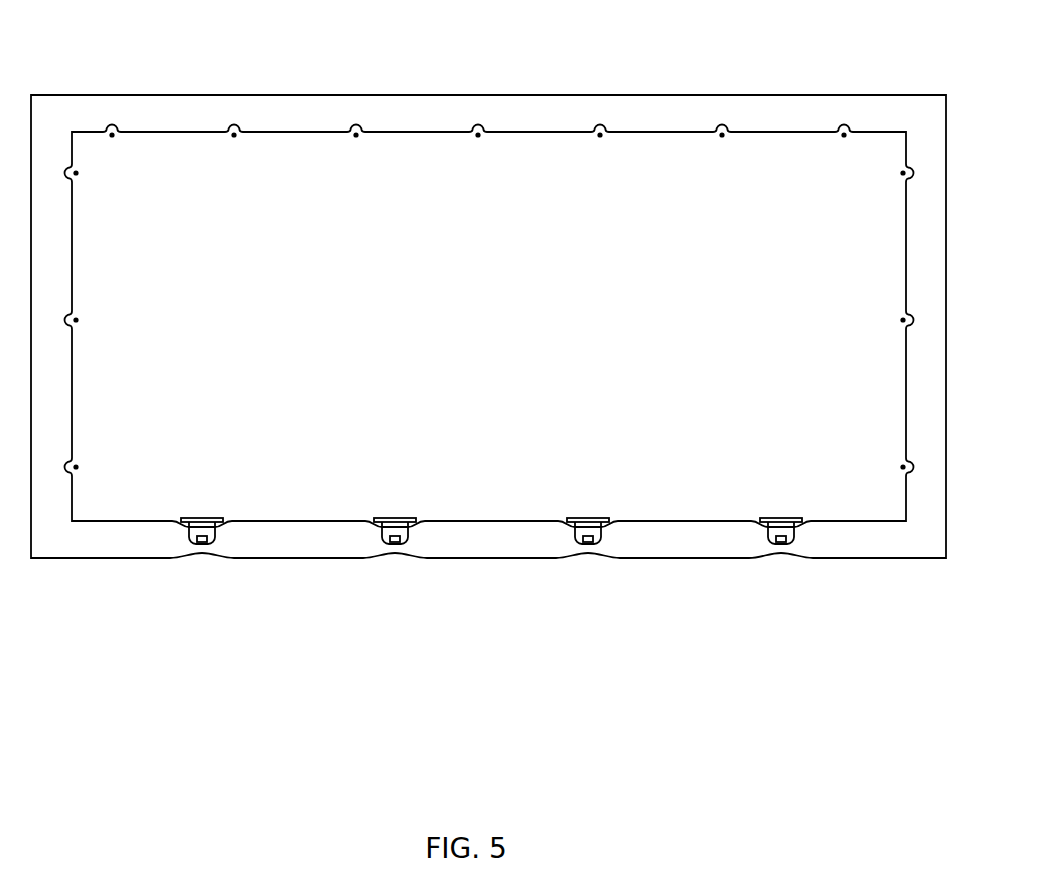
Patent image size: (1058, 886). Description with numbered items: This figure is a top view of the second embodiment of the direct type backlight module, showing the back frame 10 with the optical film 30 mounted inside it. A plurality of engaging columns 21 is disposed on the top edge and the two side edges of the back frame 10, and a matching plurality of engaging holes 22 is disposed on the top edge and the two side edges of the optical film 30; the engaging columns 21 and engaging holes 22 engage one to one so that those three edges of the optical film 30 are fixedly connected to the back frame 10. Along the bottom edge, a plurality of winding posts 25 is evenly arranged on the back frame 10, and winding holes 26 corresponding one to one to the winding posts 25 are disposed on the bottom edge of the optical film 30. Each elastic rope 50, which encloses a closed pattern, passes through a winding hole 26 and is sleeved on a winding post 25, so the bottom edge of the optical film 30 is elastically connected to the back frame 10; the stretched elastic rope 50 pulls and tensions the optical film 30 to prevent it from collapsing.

The back frame 10 is at (218, 105).
The engaging columns 21 is at (110, 130).
The engaging holes 22 is at (237, 128).
The optical film 30 is at (354, 168).
The winding posts 25 is at (201, 541).
The elastic ropes 50 is at (386, 545).
The winding holes 26 is at (569, 523).